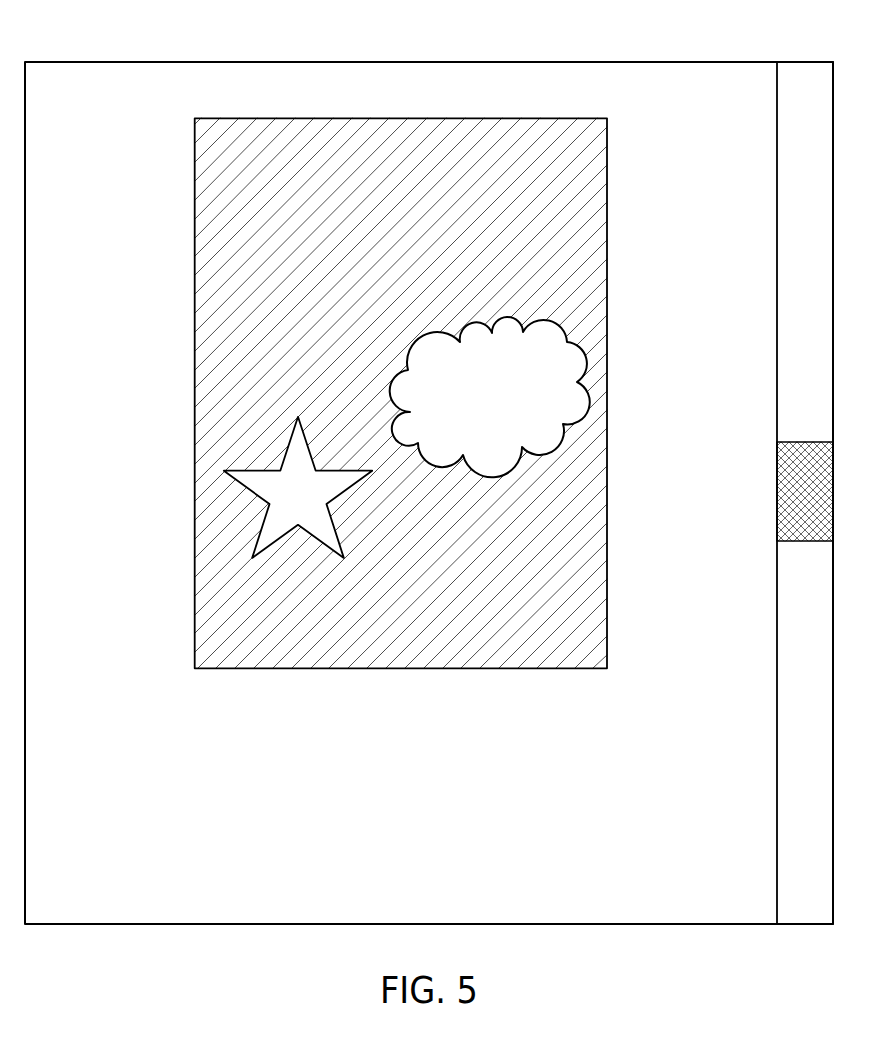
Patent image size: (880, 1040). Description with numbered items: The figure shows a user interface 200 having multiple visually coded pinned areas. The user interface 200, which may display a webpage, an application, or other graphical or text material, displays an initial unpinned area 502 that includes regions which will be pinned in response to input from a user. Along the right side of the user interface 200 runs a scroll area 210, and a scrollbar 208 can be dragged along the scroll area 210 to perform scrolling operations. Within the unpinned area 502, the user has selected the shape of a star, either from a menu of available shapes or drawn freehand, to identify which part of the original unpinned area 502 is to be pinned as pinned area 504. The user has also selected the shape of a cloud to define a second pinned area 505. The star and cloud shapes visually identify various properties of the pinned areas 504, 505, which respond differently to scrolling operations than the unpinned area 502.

The user interface 200 is at (115, 144).
The scroll area 210 is at (803, 73).
The scrollbar 208 is at (777, 494).
The initial unpinned area 502 is at (607, 176).
The pinned area 504 is at (325, 499).
The pinned area 505 is at (518, 410).